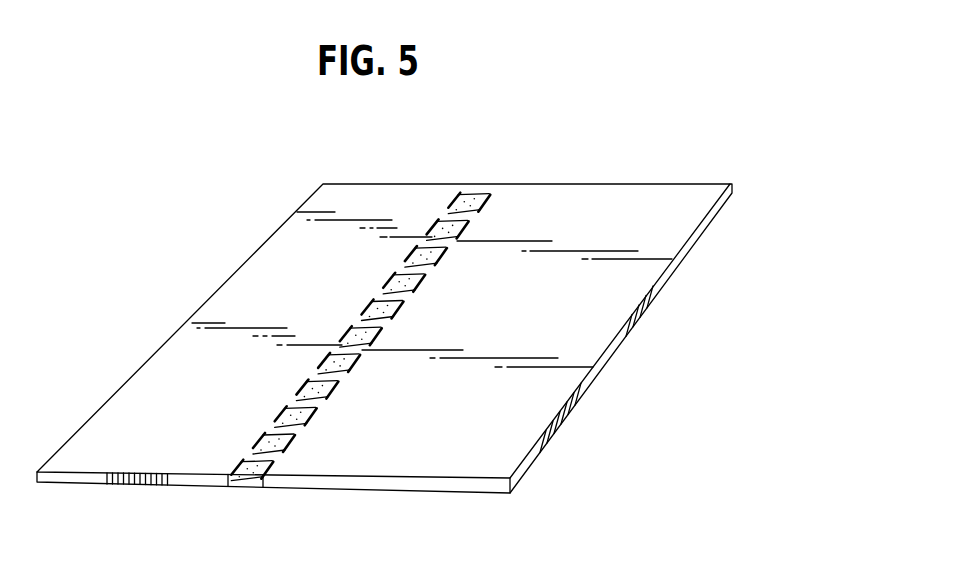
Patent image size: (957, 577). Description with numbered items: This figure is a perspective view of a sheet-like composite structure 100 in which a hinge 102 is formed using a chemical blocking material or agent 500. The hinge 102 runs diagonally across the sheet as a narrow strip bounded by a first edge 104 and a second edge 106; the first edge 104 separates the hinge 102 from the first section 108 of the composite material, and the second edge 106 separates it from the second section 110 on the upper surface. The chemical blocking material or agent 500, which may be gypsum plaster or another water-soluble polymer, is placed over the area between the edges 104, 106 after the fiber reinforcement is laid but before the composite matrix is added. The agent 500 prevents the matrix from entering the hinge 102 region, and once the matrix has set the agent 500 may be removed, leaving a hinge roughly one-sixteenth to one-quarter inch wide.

The composite structure 100 is at (240, 160).
The hinge 102 is at (480, 190).
The first edge 104 is at (253, 449).
The second edge 106 is at (253, 449).
The first section 108 is at (643, 215).
The second section 110 is at (207, 376).
The chemical blocking material or agent 500 is at (277, 420).